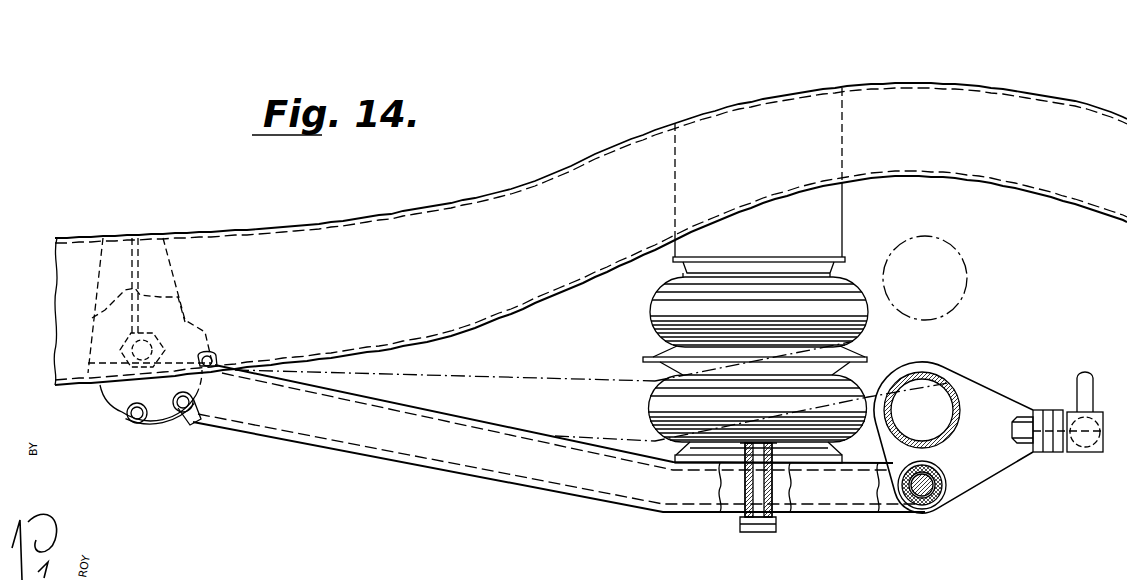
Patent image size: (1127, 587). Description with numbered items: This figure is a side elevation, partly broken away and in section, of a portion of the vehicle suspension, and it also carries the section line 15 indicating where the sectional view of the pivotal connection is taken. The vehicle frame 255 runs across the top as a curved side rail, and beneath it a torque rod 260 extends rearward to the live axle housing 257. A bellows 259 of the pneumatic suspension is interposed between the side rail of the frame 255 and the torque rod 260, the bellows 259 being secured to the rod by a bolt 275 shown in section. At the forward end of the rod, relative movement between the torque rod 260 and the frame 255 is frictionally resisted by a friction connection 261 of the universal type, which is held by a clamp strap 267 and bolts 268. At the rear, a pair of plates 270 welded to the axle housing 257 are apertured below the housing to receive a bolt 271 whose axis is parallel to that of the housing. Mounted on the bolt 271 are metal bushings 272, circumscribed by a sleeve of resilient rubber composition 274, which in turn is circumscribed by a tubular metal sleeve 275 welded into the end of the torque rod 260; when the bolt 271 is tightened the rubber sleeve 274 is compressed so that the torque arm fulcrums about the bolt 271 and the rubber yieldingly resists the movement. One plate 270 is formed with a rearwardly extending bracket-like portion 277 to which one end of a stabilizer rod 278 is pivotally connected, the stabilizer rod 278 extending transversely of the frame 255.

The section line 15- 15 is at (920, 560).
The vehicle frame 255 is at (496, 205).
The live axle housing 257 is at (937, 384).
The bellows member 259 is at (660, 312).
The torque rod 260 is at (560, 476).
The friction connection 261 is at (101, 393).
The clamp strap 267 is at (170, 420).
The clamp bolts 268 is at (135, 421).
The plate 270 is at (950, 448).
The bolt 271 is at (928, 512).
The metal bushing 272 is at (932, 505).
The rubber sleeve 274 is at (905, 490).
The tubular metal sleeve 275 is at (893, 493).
The bracket-like portion 277 is at (990, 458).
The stabilizer rod 278 is at (1083, 392).